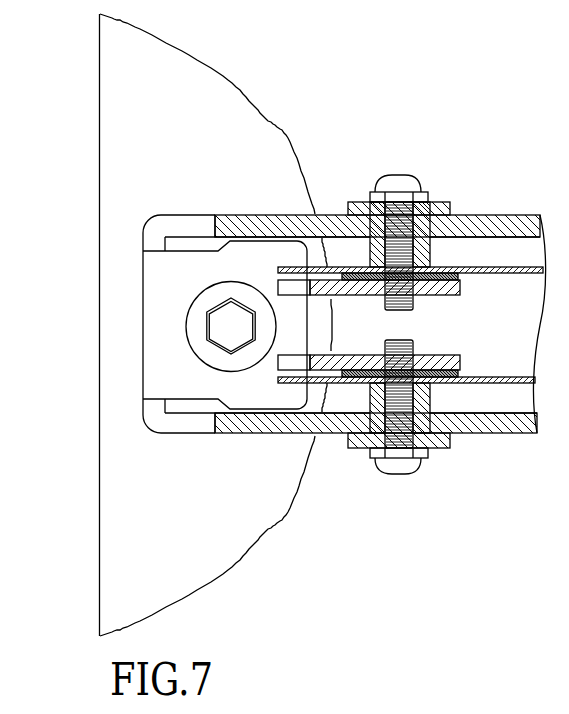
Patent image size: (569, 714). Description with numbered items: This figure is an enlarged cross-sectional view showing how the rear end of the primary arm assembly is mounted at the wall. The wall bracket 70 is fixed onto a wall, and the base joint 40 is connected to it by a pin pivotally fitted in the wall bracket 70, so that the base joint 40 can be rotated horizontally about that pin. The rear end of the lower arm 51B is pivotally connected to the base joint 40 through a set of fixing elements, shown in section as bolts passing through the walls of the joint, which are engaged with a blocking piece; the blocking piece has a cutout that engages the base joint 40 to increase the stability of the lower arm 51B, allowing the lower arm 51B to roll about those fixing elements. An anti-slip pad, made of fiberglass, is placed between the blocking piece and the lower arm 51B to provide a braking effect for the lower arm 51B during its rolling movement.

The wall bracket 70 is at (99, 325).
The base joint 40 is at (492, 218).
The lower arm 51B is at (499, 434).